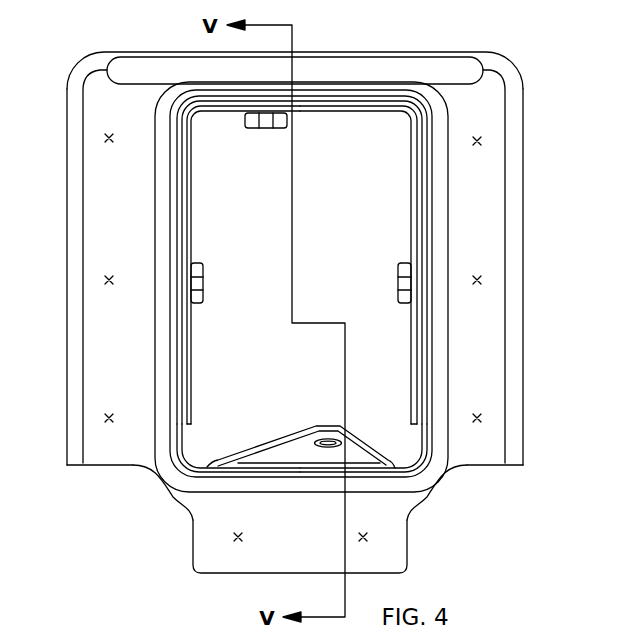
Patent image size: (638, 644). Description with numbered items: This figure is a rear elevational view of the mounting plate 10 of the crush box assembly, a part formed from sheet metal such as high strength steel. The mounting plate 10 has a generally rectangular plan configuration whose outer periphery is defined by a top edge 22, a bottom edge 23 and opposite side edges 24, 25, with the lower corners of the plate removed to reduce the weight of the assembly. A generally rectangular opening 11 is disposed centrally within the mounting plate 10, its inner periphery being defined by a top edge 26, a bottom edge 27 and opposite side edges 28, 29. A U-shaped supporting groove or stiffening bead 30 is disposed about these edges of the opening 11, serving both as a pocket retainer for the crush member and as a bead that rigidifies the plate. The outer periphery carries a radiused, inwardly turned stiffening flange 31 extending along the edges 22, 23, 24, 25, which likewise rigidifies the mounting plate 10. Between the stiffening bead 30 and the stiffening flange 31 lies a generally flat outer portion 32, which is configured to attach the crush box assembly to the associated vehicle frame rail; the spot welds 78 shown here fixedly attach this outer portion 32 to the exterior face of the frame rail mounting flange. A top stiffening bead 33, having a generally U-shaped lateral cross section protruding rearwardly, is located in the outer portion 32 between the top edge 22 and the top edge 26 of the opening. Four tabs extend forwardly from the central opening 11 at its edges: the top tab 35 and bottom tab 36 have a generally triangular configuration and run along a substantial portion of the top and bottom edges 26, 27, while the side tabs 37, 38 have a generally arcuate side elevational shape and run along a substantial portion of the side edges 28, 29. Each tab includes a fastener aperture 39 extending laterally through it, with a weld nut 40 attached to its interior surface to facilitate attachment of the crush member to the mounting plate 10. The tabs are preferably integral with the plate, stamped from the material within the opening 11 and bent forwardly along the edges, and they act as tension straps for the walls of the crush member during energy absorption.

The mounting plate 10 is at (520, 46).
The opening 11 is at (262, 303).
The top edge 22 is at (343, 52).
The bottom edge 23 is at (233, 575).
The side edge 24 is at (67, 282).
The side edge 25 is at (523, 262).
The top edge 26 is at (348, 115).
The bottom edge 27 is at (262, 475).
The side edge 28 is at (180, 440).
The side edge 29 is at (422, 440).
The stiffening bead 30 is at (440, 357).
The stiffening flange 31 is at (78, 392).
The outer portion 32 is at (103, 192).
The top stiffening bead 33 is at (383, 65).
The top tab 35 is at (305, 115).
The bottom tab 36 is at (303, 418).
The side tab 37 is at (193, 237).
The side tab 38 is at (411, 232).
The fastener aperture 39 is at (332, 450).
The weld nut 40 is at (270, 128).
The spot welds 78 is at (107, 137).